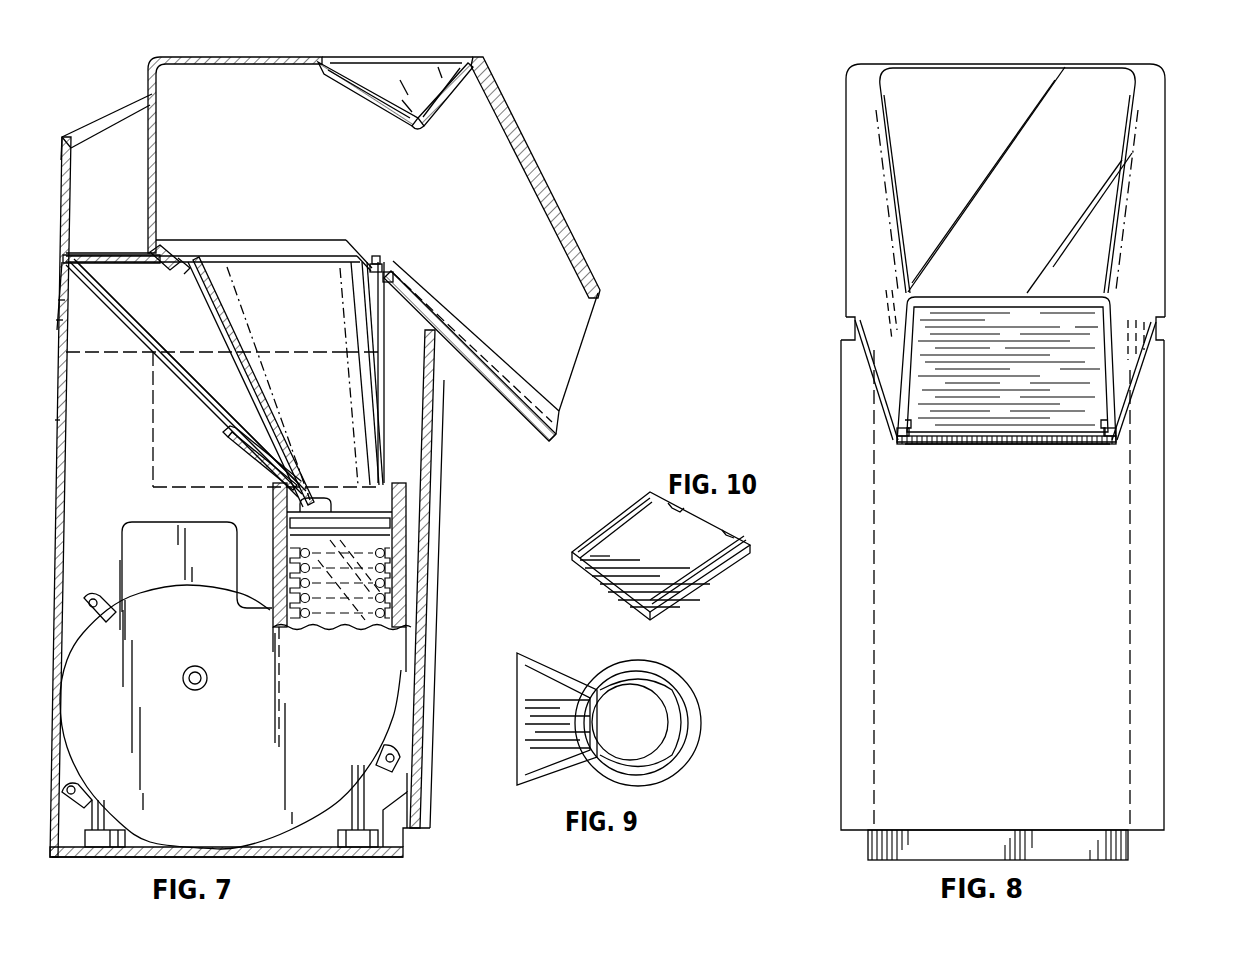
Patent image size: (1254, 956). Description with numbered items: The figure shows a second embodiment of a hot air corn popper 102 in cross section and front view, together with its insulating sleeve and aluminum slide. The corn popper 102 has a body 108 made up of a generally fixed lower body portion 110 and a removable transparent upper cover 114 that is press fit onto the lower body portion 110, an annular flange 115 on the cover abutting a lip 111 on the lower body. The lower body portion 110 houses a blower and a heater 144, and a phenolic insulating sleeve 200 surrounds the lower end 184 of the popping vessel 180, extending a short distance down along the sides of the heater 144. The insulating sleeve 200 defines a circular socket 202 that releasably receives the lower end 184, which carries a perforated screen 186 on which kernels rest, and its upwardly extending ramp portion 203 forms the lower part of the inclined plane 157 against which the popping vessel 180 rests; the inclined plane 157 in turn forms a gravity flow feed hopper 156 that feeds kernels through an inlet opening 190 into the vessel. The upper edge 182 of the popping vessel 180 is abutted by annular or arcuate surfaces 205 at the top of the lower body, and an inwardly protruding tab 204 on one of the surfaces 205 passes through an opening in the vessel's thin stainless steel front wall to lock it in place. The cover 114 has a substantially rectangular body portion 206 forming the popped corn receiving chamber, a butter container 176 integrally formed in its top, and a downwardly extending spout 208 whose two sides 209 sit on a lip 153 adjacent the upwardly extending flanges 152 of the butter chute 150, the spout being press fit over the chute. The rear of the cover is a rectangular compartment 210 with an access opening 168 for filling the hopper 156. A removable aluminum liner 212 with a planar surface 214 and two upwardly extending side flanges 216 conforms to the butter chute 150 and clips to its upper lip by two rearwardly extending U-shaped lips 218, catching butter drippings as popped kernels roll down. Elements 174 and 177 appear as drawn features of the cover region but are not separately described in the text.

In FIG. 7, the corn popper 102 is at (531, 120).
In FIG. 8, the corn popper 102 is at (1191, 126).
In FIG. 7, the body 108 is at (440, 436).
In FIG. 7, the lower body portion 110 is at (431, 560).
In FIG. 8, the lower body portion 110 is at (1166, 578).
In FIG. 7, the lip 111 is at (56, 312).
In FIG. 7, the upper cover 114 is at (306, 53).
In FIG. 8, the upper cover 114 is at (1026, 58).
In FIG. 7, the annular flange 115 is at (60, 278).
In FIG. 7, the heater 144 is at (385, 614).
In FIG. 7, the butter chute 150 is at (196, 646).
In FIG. 8, the butter chute 150 is at (985, 446).
In FIG. 8, the upwardly extending flanges 152 is at (905, 444).
In FIG. 8, the lip 153 is at (892, 445).
In FIG. 7, the gravity flow feed hopper 156 is at (150, 311).
In FIG. 7, the inclined plane 157 is at (205, 401).
In FIG. 7, the access opening 168 is at (104, 116).
In FIG. 7, the door panel 174 is at (562, 354).
In FIG. 7, the butter container 176 is at (432, 115).
In FIG. 7, the frame apex 177 is at (419, 130).
In FIG. 7, the popping vessel 180 is at (367, 337).
In FIG. 7, the upper edge 182 is at (188, 268).
In FIG. 7, the lower end 184 is at (375, 488).
In FIG. 7, the perforated screen 186 is at (298, 503).
In FIG. 7, the inlet opening 190 is at (298, 463).
In FIG. 7, the insulating sleeve 200 is at (278, 532).
In FIG. 9, the insulating sleeve 200 is at (699, 698).
In FIG. 7, the circular socket 202 is at (402, 508).
In FIG. 9, the circular socket 202 is at (625, 672).
In FIG. 7, the ramp portion 203 is at (244, 458).
In FIG. 7, the tab 204 is at (372, 258).
In FIG. 7, the annular or arcuate surfaces 205 is at (388, 280).
In FIG. 9, the annular or arcuate surfaces 205 is at (552, 748).
In FIG. 7, the rectangular body portion 206 is at (225, 61).
In FIG. 8, the rectangular body portion 206 is at (868, 64).
In FIG. 7, the spout 208 is at (554, 192).
In FIG. 8, the spout 208 is at (1085, 232).
In FIG. 7, the sides 209 is at (591, 320).
In FIG. 8, the sides 209 is at (915, 325).
In FIG. 7, the rectangular compartment 210 is at (63, 158).
In FIG. 7, the aluminum liner 212 is at (553, 432).
In FIG. 10, the aluminum liner 212 is at (698, 524).
In FIG. 8, the aluminum liner 212 is at (1021, 448).
In FIG. 10, the planar surface 214 is at (640, 562).
In FIG. 8, the planar surface 214 is at (1038, 406).
In FIG. 10, the side flanges 216 is at (630, 508).
In FIG. 7, the U-shaped lips 218 is at (383, 266).
In FIG. 10, the U-shaped lips 218 is at (680, 510).